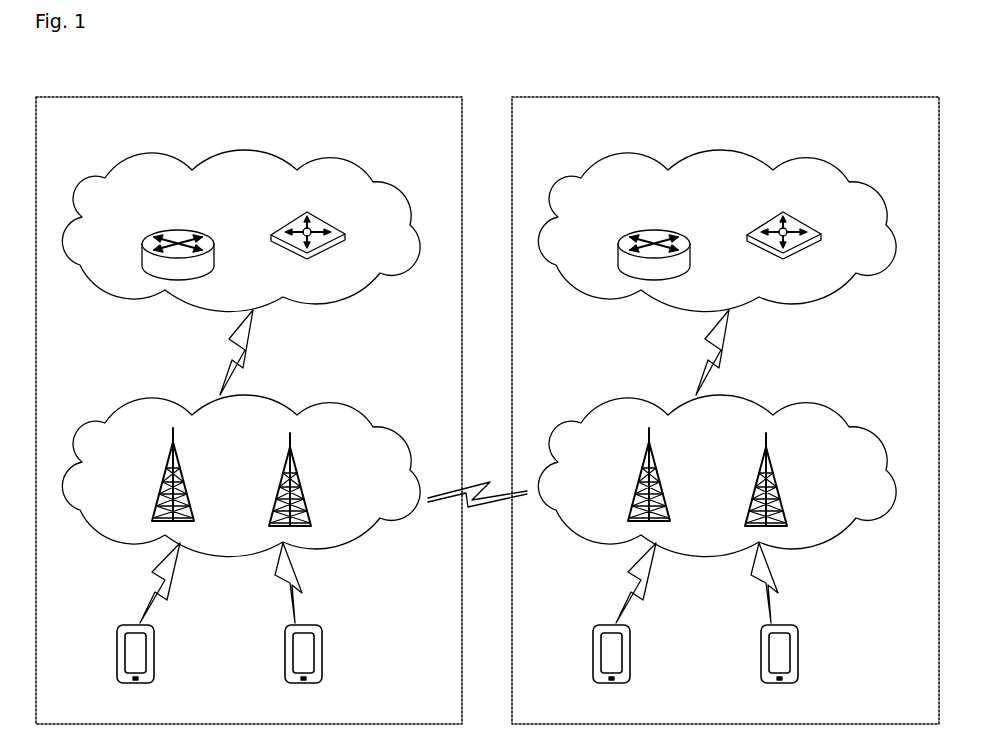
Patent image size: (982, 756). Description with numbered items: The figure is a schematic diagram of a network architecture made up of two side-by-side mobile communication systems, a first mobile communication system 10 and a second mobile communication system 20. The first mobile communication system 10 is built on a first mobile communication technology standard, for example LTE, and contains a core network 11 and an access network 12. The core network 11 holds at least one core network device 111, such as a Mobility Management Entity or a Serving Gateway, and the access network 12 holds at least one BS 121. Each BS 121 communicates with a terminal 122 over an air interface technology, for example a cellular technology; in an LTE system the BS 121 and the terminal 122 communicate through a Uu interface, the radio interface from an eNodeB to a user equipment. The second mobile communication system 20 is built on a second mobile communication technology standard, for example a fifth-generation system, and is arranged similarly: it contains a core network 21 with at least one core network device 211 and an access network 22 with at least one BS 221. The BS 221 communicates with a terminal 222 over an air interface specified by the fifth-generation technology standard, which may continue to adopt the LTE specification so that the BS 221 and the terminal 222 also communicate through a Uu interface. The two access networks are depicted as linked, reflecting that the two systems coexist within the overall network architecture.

The first mobile communication system 10 is at (249, 410).
The core network 11 is at (241, 231).
The core network device 111 is at (203, 232).
The access network 12 is at (241, 476).
The BS 121 is at (182, 466).
The terminal 122 is at (155, 641).
The second mobile communication system 20 is at (725, 410).
The core network 21 is at (717, 231).
The core network device 211 is at (741, 233).
The access network 22 is at (717, 476).
The BS 221 is at (728, 477).
The terminal 222 is at (724, 643).